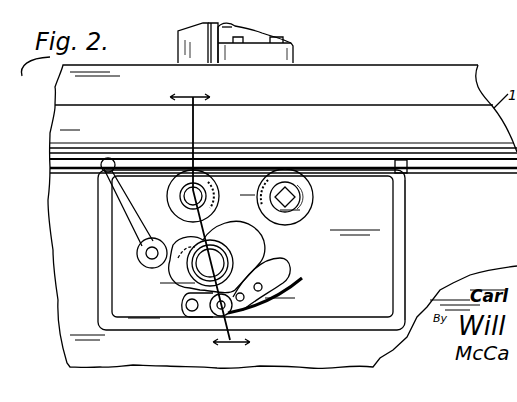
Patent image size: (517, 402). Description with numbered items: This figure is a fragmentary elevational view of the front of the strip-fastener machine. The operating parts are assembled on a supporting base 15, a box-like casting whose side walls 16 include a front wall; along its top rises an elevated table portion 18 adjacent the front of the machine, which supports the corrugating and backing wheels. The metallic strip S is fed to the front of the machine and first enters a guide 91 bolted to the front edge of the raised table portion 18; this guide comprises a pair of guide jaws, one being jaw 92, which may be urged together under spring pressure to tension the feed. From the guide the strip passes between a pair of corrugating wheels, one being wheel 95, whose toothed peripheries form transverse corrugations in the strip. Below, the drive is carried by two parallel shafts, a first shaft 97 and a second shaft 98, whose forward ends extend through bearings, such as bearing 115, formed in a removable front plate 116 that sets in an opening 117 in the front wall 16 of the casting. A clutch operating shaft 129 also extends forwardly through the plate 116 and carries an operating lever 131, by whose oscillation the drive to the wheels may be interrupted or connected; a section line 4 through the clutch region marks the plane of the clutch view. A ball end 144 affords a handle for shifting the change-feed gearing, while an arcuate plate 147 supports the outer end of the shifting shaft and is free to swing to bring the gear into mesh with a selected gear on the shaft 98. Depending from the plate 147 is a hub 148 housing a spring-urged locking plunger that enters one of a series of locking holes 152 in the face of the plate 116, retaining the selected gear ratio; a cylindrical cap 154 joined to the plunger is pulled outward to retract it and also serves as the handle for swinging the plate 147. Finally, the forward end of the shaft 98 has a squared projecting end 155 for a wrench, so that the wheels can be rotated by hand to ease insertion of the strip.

The section line 4- 4 is at (210, 220).
The supporting base 15 is at (263, 176).
The side wall 16 is at (57, 223).
The elevated table portion 18 is at (479, 66).
The guide 91 is at (258, 30).
The guide jaw 92 is at (212, 24).
The corrugating wheel 95 is at (198, 26).
The metallic strip S is at (226, 27).
The first shaft 97 is at (183, 193).
The second shaft 98 is at (300, 192).
The bearing 115 is at (313, 203).
The removable front plate 116 is at (388, 232).
The opening 117 is at (407, 231).
The clutch operating shaft 129 is at (140, 257).
The operating lever 131 is at (132, 230).
The ball end 144 is at (197, 282).
The arcuate plate 147 is at (262, 249).
The hub 148 is at (207, 317).
The locking holes 152 is at (293, 282).
The cylindrical cap 154 is at (217, 317).
The squared projecting end 155 is at (283, 189).